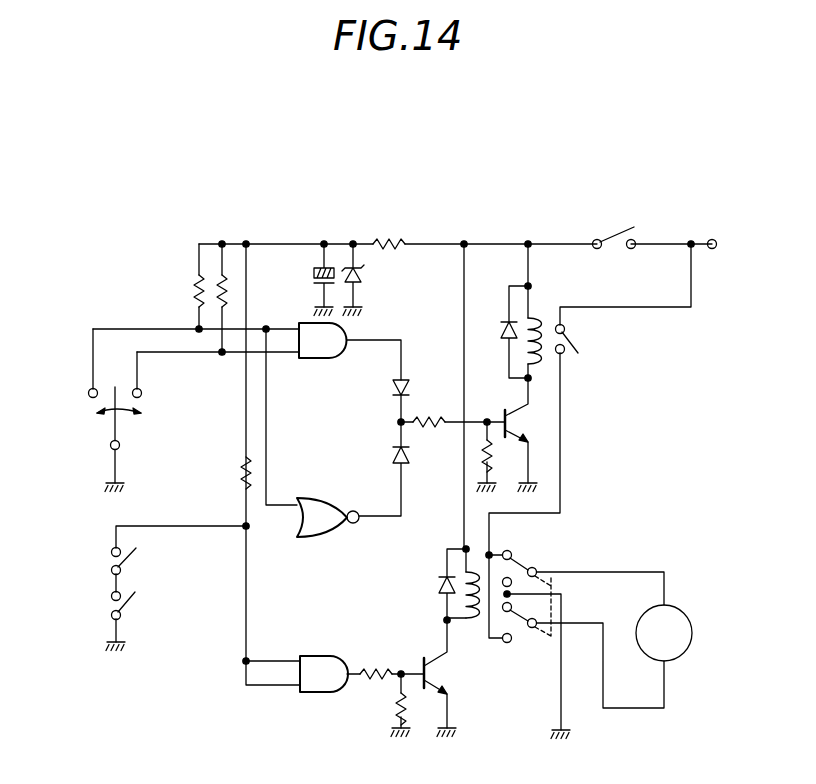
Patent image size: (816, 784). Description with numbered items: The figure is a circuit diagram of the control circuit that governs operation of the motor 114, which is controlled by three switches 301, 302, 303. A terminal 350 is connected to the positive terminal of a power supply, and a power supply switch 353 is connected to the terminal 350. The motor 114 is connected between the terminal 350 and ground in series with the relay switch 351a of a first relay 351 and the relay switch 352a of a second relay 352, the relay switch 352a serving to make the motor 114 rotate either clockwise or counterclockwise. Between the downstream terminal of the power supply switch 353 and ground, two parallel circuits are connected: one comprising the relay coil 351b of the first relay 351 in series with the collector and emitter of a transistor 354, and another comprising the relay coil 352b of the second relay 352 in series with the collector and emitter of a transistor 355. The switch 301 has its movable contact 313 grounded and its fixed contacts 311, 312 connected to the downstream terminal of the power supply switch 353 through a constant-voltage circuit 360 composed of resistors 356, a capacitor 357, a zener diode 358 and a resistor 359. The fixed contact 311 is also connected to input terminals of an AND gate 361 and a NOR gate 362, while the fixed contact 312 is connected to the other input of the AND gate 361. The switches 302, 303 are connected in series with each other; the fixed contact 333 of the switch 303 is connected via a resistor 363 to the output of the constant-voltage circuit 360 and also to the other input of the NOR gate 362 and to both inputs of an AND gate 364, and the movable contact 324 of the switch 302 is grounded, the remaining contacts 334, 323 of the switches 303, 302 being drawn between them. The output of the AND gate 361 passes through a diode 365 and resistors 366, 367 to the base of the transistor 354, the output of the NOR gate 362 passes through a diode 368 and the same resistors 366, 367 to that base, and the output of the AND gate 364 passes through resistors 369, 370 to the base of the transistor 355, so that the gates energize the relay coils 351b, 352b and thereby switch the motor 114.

The motor 114 is at (692, 633).
The switch 301 is at (121, 437).
The switch 302 is at (130, 612).
The switch 303 is at (124, 566).
The fixed contact 311 is at (88, 390).
The fixed contact 312 is at (142, 392).
The movable contact 313 is at (112, 420).
The contact 323 is at (112, 594).
The movable contact 324 is at (122, 618).
The fixed contact 333 is at (113, 548).
The contact 334 is at (112, 562).
The terminal 350 is at (712, 237).
The first relay 351 is at (545, 355).
The relay switch 351a is at (580, 340).
The relay coil 351b is at (505, 322).
The second relay 352 is at (505, 626).
The relay switch 352a is at (509, 619).
The relay coil 352b is at (464, 600).
The power supply switch 353 is at (615, 231).
The transistor 354 is at (525, 428).
The transistor 355 is at (454, 678).
The resistors 356 is at (197, 288).
The capacitor 357 is at (316, 278).
The zener diode 358 is at (362, 276).
The resistor 359 is at (388, 238).
The constant-voltage circuit 360 is at (350, 240).
The AND gate 361 is at (323, 358).
The NOR gate 362 is at (323, 502).
The resistor 363 is at (243, 463).
The AND gate 364 is at (323, 656).
The diode 365 is at (403, 390).
The resistor 366 is at (429, 429).
The resistor 367 is at (495, 453).
The diode 368 is at (397, 449).
The resistor 369 is at (375, 668).
The resistor 370 is at (397, 705).